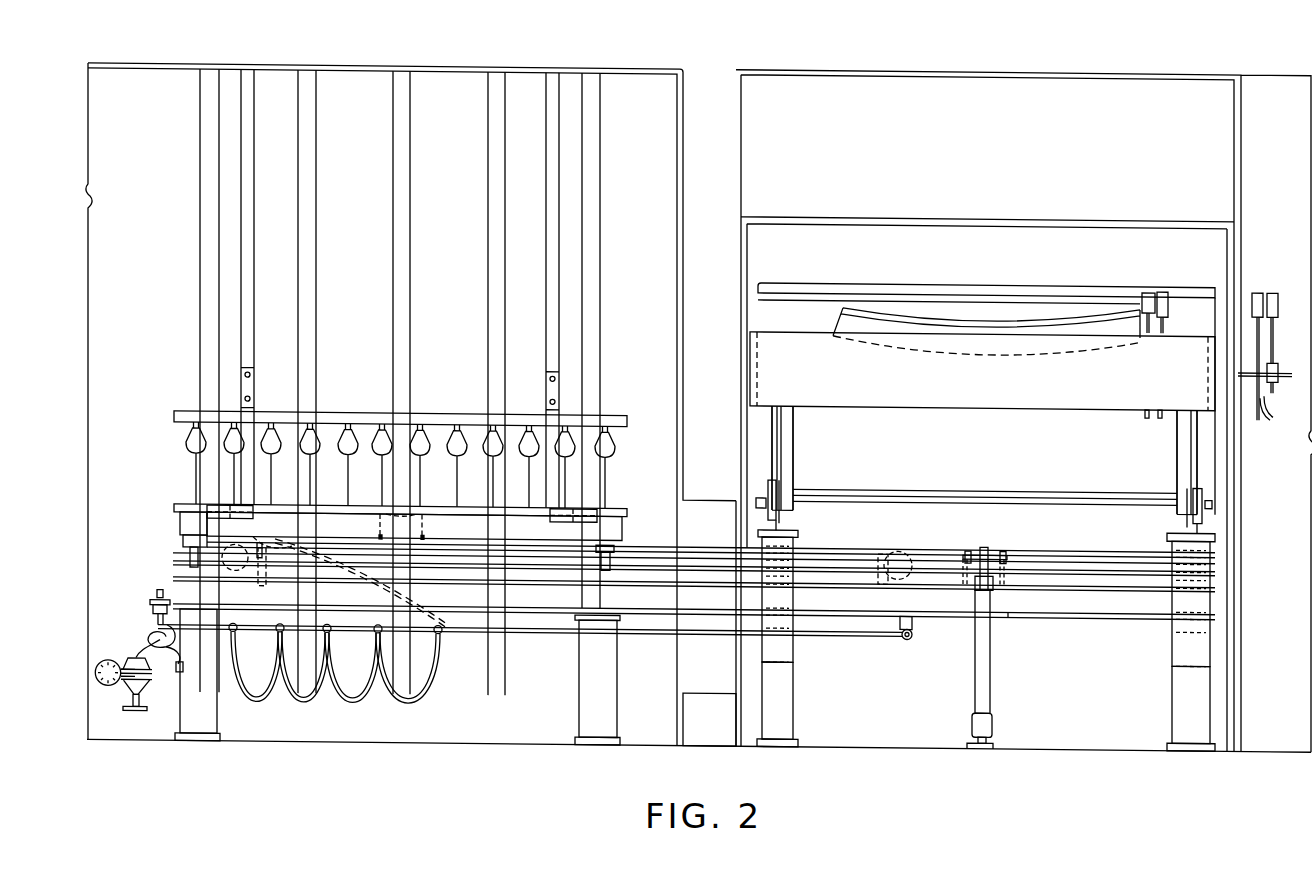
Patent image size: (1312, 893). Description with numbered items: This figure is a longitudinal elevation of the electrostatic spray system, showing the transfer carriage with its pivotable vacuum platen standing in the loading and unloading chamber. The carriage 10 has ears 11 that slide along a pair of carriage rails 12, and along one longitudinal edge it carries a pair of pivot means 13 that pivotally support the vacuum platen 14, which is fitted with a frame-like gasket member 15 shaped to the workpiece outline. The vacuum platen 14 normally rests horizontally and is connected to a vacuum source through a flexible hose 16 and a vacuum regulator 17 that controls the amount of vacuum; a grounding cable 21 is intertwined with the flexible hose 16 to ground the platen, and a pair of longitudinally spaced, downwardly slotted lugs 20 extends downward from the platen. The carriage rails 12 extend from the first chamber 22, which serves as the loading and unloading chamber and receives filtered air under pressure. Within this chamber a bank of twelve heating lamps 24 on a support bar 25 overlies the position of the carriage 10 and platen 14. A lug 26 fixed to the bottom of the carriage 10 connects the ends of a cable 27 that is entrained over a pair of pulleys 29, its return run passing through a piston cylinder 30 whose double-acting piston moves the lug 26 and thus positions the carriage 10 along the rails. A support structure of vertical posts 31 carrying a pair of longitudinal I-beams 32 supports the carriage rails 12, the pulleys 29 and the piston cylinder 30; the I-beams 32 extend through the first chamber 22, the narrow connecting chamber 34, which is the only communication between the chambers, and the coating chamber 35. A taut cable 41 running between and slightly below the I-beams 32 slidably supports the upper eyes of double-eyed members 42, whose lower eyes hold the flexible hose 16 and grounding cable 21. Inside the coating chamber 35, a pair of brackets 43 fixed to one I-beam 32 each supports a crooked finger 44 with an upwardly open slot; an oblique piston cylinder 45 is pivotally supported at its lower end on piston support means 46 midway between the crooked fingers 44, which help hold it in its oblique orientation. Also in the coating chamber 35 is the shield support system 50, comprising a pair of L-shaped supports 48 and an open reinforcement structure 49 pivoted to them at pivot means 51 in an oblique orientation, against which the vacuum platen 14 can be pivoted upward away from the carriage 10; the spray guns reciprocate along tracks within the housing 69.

The carriage 10 is at (170, 523).
The ears 11 is at (183, 557).
The carriage rails 12 is at (480, 557).
The pivot means 13 is at (238, 502).
The vacuum platen 14 is at (337, 502).
The frame-like gasket member 15 is at (187, 502).
The flexible hose 16 is at (143, 634).
The vacuum regulator 17 is at (132, 657).
The downwardly slotted lugs 20 is at (410, 514).
The grounding cable 21 is at (166, 664).
The first chamber 22 is at (577, 52).
The heating lamps 24 is at (562, 444).
The support bar 25 is at (440, 409).
The lug 26 is at (255, 534).
The cable 27 is at (650, 541).
The pulleys 29 is at (226, 572).
The piston cylinder 30 is at (265, 577).
The vertical posts 31 is at (217, 716).
The longitudinal I-beams 32 is at (1008, 607).
The narrow connecting chamber 34 is at (707, 479).
The coating chamber 35 is at (863, 54).
The taut cable 41 is at (520, 627).
The double-eyed members 42 is at (352, 621).
The brackets 43 is at (1010, 568).
The crooked fingers 44 is at (1002, 537).
The piston cylinder 45 is at (990, 673).
The piston support means 46 is at (995, 733).
The L-shaped supports 48 is at (795, 640).
The open reinforcement structure 49 is at (795, 452).
The shield support system 50 is at (875, 272).
The pivot means 51 is at (757, 499).
The housing 69 is at (988, 397).